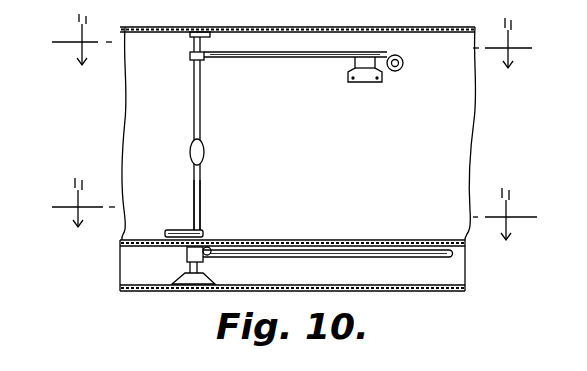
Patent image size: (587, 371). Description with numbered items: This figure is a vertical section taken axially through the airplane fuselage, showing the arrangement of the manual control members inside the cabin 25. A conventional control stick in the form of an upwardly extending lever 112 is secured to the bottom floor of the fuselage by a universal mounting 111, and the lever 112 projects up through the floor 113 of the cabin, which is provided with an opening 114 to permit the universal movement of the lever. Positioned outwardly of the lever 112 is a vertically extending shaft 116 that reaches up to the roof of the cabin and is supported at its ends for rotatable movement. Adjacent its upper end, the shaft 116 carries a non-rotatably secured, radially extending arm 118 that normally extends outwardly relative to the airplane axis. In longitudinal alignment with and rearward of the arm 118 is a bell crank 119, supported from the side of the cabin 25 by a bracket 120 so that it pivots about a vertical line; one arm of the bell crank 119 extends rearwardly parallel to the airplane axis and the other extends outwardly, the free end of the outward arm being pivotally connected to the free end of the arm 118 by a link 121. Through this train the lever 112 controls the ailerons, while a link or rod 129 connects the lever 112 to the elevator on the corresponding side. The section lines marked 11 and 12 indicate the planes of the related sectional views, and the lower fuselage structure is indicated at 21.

The cabin 25 is at (331, 28).
The frame member 21 is at (146, 291).
The floor 113 is at (315, 242).
The radially extending arm 118 is at (192, 56).
The vertically extending shaft 116 is at (200, 98).
The control stick 112 is at (200, 208).
The link 121 is at (290, 58).
The bell crank 119 is at (388, 56).
The bracket 120 is at (363, 83).
The opening 114 is at (210, 241).
The link or rod 129 is at (305, 251).
The universal mounting 111 is at (197, 278).
The section line 12 is at (292, 59).
The section line 11 is at (294, 225).